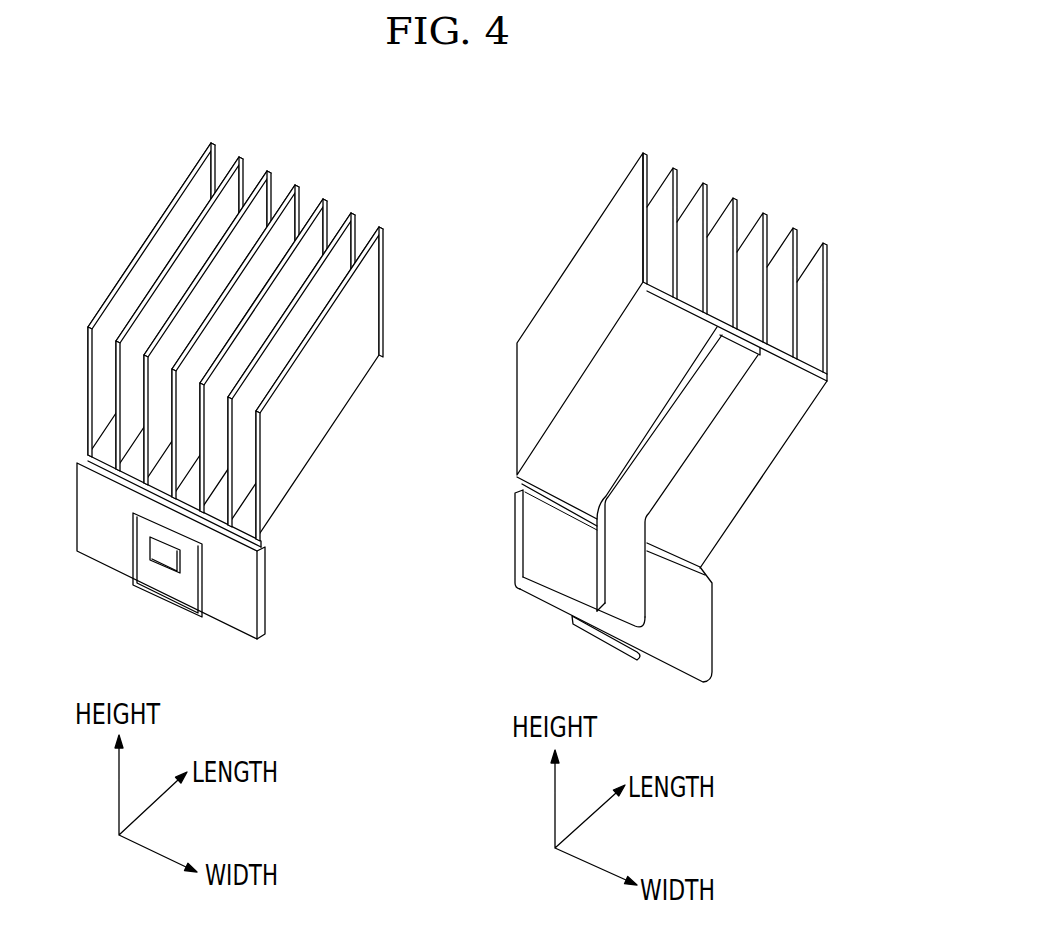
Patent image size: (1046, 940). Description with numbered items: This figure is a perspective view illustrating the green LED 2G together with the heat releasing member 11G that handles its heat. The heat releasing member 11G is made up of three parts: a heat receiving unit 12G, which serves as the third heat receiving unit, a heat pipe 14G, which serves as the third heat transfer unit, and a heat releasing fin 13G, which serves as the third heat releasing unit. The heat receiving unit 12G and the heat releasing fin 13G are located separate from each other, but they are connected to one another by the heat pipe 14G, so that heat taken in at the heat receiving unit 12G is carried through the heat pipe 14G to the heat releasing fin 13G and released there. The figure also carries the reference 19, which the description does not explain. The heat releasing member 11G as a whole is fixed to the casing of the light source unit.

The heat releasing member 11G is at (452, 392).
The heat receiving unit 12G is at (251, 575).
The heat releasing fin 13G is at (378, 282).
The heat pipe 14G is at (190, 494).
The gap 19 is at (242, 532).
The green LED 2G is at (168, 590).